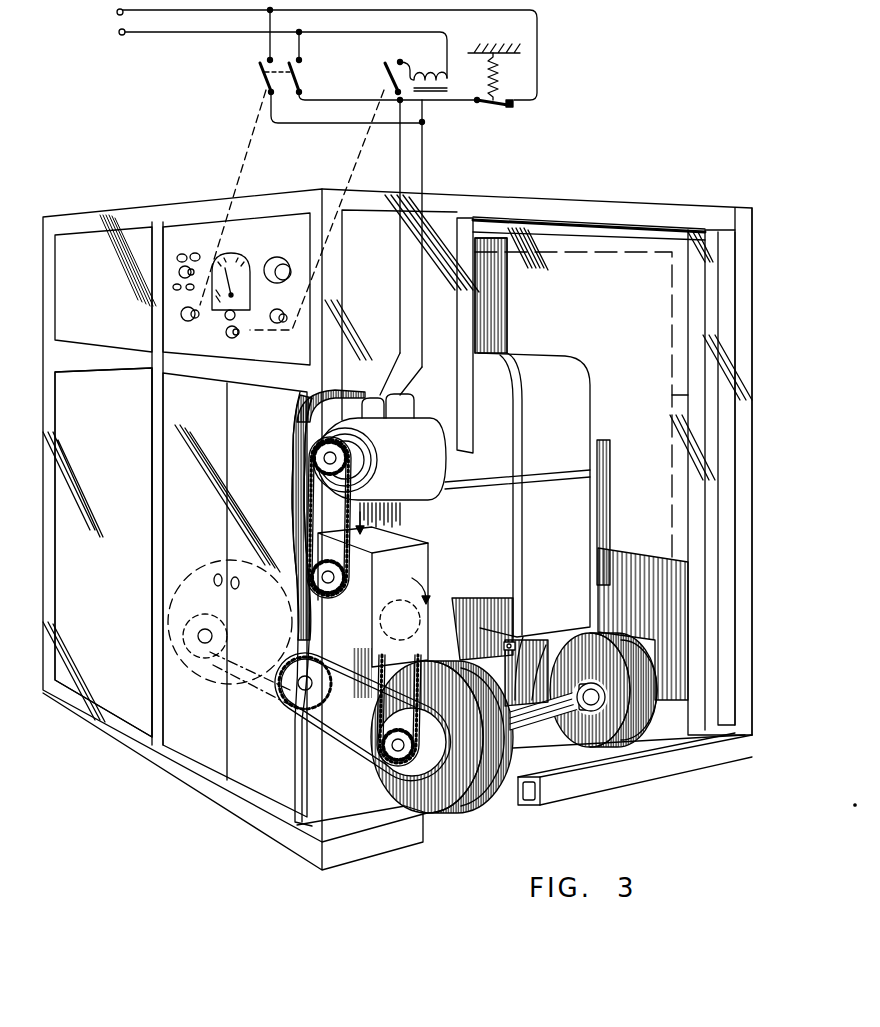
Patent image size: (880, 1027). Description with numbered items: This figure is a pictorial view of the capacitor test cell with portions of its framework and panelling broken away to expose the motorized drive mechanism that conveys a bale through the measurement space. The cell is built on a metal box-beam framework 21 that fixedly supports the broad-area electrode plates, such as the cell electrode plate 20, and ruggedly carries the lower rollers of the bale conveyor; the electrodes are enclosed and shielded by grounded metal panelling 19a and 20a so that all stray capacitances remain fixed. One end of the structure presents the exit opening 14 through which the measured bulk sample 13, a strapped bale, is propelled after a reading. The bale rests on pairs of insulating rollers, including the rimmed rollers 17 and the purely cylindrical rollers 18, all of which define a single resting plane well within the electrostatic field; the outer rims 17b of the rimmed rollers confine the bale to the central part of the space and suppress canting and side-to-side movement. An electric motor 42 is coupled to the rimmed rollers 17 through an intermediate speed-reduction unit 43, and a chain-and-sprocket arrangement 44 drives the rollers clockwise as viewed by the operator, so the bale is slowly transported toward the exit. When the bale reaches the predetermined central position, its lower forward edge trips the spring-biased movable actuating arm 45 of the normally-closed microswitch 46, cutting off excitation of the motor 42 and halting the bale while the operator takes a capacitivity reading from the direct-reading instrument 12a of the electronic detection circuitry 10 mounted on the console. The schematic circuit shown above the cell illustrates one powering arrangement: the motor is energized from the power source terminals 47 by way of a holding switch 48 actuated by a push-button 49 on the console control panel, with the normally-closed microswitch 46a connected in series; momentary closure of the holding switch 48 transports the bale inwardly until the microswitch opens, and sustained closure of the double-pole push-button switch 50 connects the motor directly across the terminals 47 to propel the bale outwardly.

The electronic detection circuitry 10 is at (262, 222).
The direct-reading instrument 12a is at (225, 268).
The bulk sample 13 is at (562, 453).
The exit opening 14 is at (670, 394).
The rimmed rollers 17 is at (500, 787).
The outer rims 17b is at (630, 606).
The cylindrical rollers 18 is at (553, 733).
The grounded metal panelling 19a is at (85, 483).
The cell electrode plate 20 is at (655, 322).
The grounded metal panelling 20a is at (788, 513).
The metal box-beam framework 21 is at (497, 230).
The electric motor 42 is at (420, 471).
The speed-reduction unit 43 is at (408, 575).
The chain-and-sprocket arrangement 44 is at (330, 748).
The movable actuating arm 45 is at (507, 642).
The microswitch 46 is at (550, 652).
The normally-closed microswitch 46a is at (492, 122).
The power source terminals 47 is at (120, 31).
The holding switch 48 is at (374, 72).
The push-button 49 is at (225, 336).
The double-pole push-button switch 50 is at (248, 66).